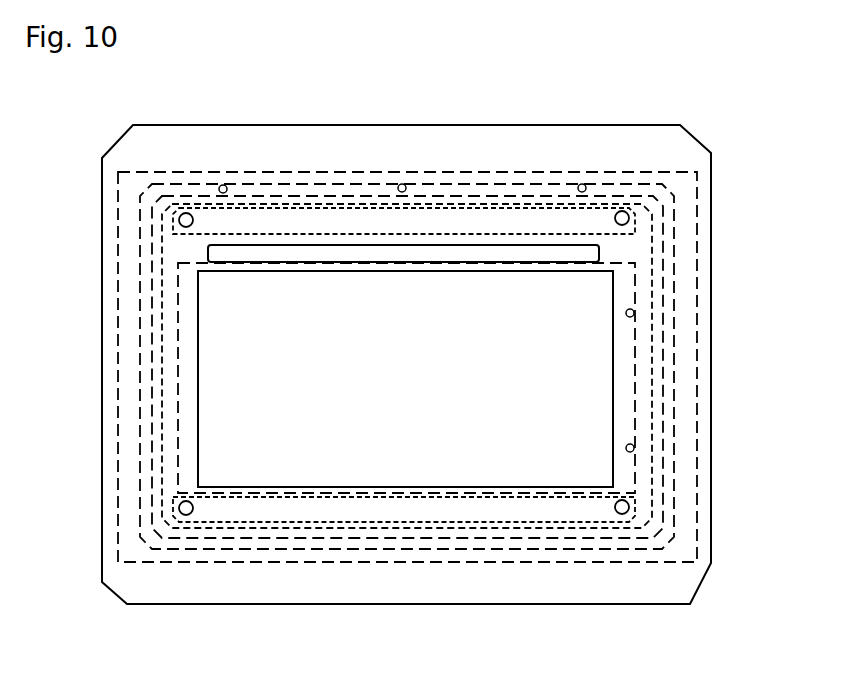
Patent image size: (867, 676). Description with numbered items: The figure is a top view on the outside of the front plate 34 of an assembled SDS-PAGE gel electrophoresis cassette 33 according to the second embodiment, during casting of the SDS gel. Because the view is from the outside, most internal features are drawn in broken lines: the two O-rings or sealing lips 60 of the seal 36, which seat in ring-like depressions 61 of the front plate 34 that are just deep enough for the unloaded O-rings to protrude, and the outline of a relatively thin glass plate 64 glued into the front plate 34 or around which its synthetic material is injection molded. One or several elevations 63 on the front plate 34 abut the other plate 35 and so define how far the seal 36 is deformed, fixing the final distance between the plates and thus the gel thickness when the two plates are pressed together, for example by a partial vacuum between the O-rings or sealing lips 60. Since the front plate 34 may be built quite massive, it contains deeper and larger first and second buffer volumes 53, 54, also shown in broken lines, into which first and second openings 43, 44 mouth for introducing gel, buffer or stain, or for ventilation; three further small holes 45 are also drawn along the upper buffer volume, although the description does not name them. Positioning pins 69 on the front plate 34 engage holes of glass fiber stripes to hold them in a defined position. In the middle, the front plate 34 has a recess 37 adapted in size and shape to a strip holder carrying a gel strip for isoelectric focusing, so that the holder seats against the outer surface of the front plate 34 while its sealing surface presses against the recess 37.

The gel electrophoresis cassette 33 is at (774, 114).
The front plate 34 is at (297, 588).
The other plate 35 is at (200, 172).
The seal 36 is at (133, 356).
The recess 37 is at (299, 253).
The first opening 43 is at (185, 218).
The second opening 44 is at (180, 510).
The alignment hole 45 is at (225, 185).
The first buffer volume 53 is at (549, 528).
The second buffer volume 54 is at (356, 200).
The O-rings or sealing lips 60 is at (288, 194).
The ring-like depressions 61 is at (675, 367).
The elevations 63 is at (162, 430).
The glass plate 64 is at (622, 384).
The positioning pins 69 is at (634, 313).